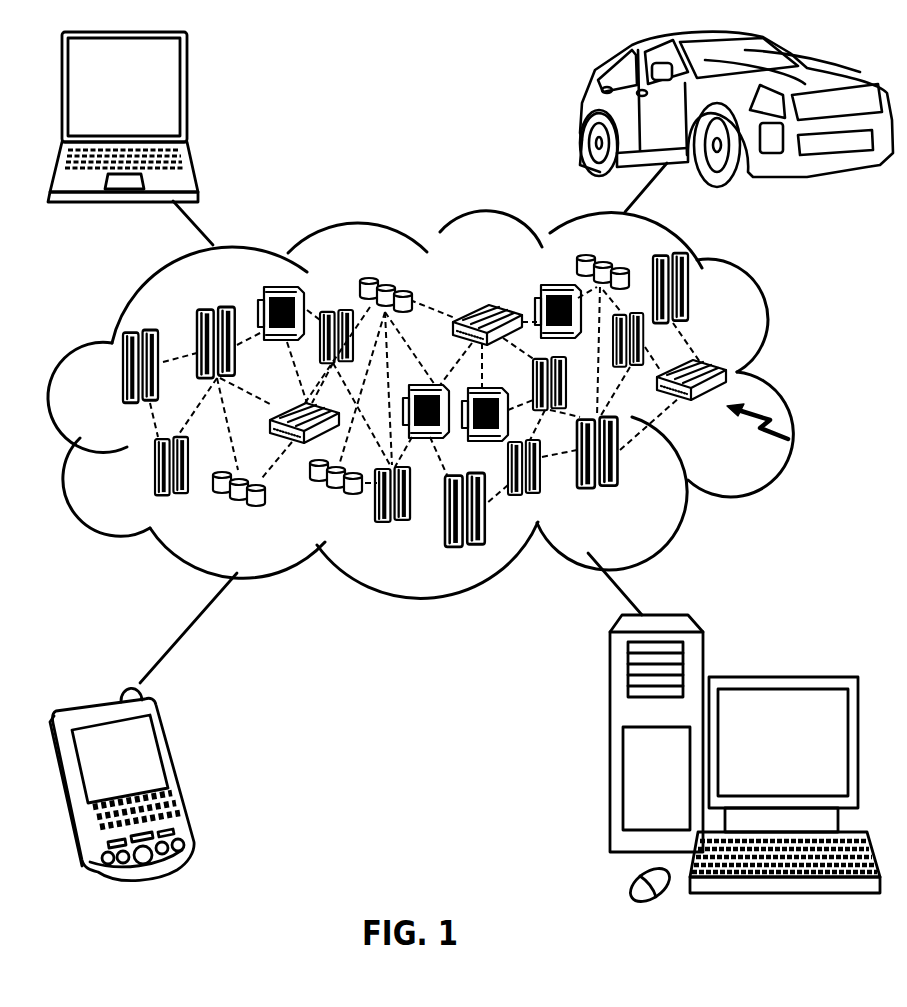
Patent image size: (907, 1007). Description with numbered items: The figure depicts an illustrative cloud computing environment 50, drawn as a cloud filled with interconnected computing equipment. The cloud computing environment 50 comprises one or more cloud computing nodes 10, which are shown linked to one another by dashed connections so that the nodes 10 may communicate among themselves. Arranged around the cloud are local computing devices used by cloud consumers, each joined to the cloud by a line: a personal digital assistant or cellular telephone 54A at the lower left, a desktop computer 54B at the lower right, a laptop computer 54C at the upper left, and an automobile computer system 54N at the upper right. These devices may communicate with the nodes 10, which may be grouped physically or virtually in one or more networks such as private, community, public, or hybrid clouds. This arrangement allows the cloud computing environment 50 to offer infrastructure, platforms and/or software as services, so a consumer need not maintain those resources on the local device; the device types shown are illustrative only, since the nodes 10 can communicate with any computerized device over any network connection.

The cloud computing nodes 10 is at (771, 426).
The cloud computing environment 50 is at (780, 379).
The personal digital assistant or cellular telephone 54A is at (177, 776).
The desktop computer 54B is at (779, 677).
The laptop computer 54C is at (187, 92).
The automobile computer system 54N is at (581, 108).